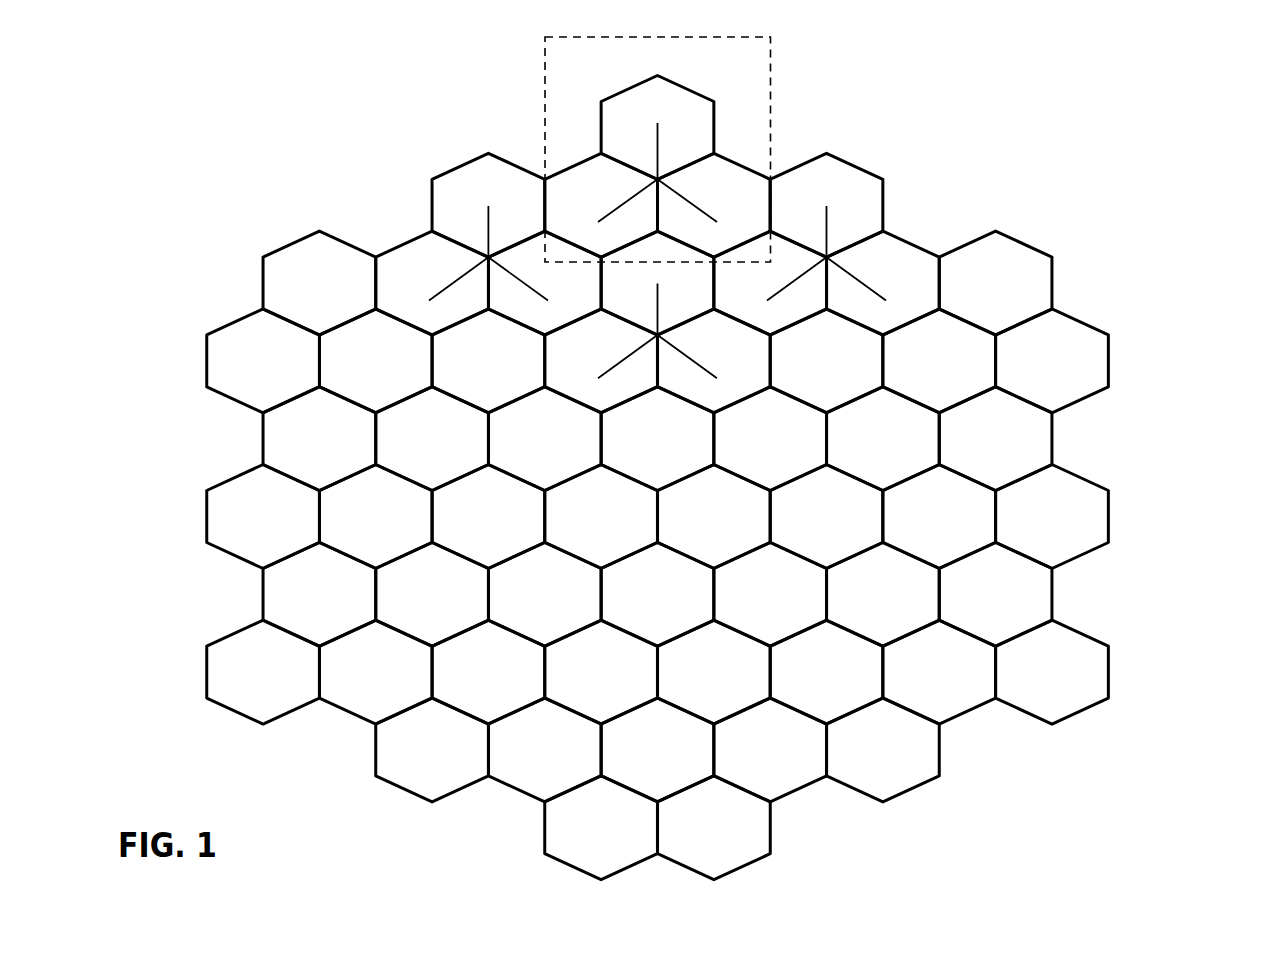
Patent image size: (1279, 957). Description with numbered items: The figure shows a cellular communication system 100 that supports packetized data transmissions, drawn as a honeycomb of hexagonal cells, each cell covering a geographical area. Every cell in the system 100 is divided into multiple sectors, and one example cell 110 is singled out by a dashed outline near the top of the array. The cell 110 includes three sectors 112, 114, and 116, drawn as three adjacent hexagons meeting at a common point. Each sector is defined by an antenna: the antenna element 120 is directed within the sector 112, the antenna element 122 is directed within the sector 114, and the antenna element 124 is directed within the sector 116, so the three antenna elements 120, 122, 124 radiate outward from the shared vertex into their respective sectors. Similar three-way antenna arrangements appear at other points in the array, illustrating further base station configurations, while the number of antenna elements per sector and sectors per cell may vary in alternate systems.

The cellular communication system 100 is at (1176, 190).
The cell 110 is at (544, 80).
The sector 112 is at (619, 93).
The sector 114 is at (591, 154).
The sector 116 is at (750, 138).
The antenna element 120 is at (660, 154).
The antenna element 122 is at (607, 211).
The antenna element 124 is at (723, 203).